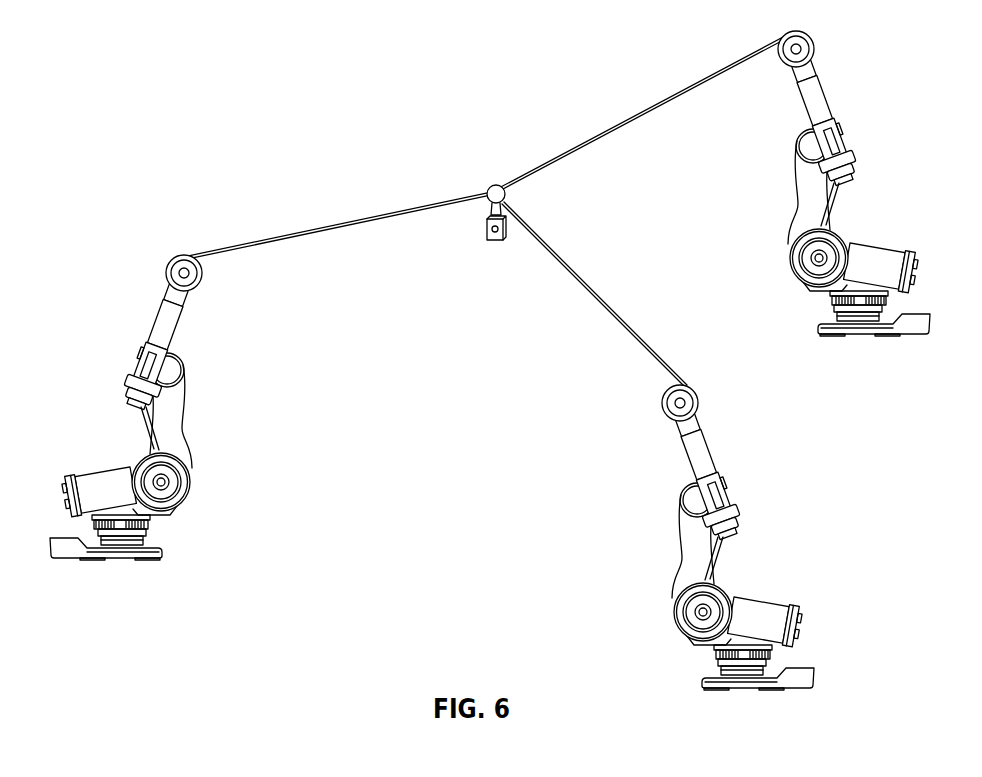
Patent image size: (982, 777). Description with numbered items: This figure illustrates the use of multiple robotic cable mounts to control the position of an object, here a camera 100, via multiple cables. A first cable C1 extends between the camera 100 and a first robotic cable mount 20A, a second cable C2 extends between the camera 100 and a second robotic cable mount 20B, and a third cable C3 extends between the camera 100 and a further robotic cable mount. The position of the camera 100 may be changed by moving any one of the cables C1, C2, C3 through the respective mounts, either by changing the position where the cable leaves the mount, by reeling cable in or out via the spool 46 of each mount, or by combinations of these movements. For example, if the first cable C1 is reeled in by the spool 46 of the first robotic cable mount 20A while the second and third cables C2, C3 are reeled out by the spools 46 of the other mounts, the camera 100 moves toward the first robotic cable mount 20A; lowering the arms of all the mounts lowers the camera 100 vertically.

The first robotic cable mount 20A is at (215, 508).
The second robotic cable mount 20B is at (885, 232).
The spool 46 is at (203, 282).
The camera 100 is at (487, 227).
The first cable C1 is at (285, 236).
The second cable C2 is at (645, 110).
The third cable C3 is at (607, 302).